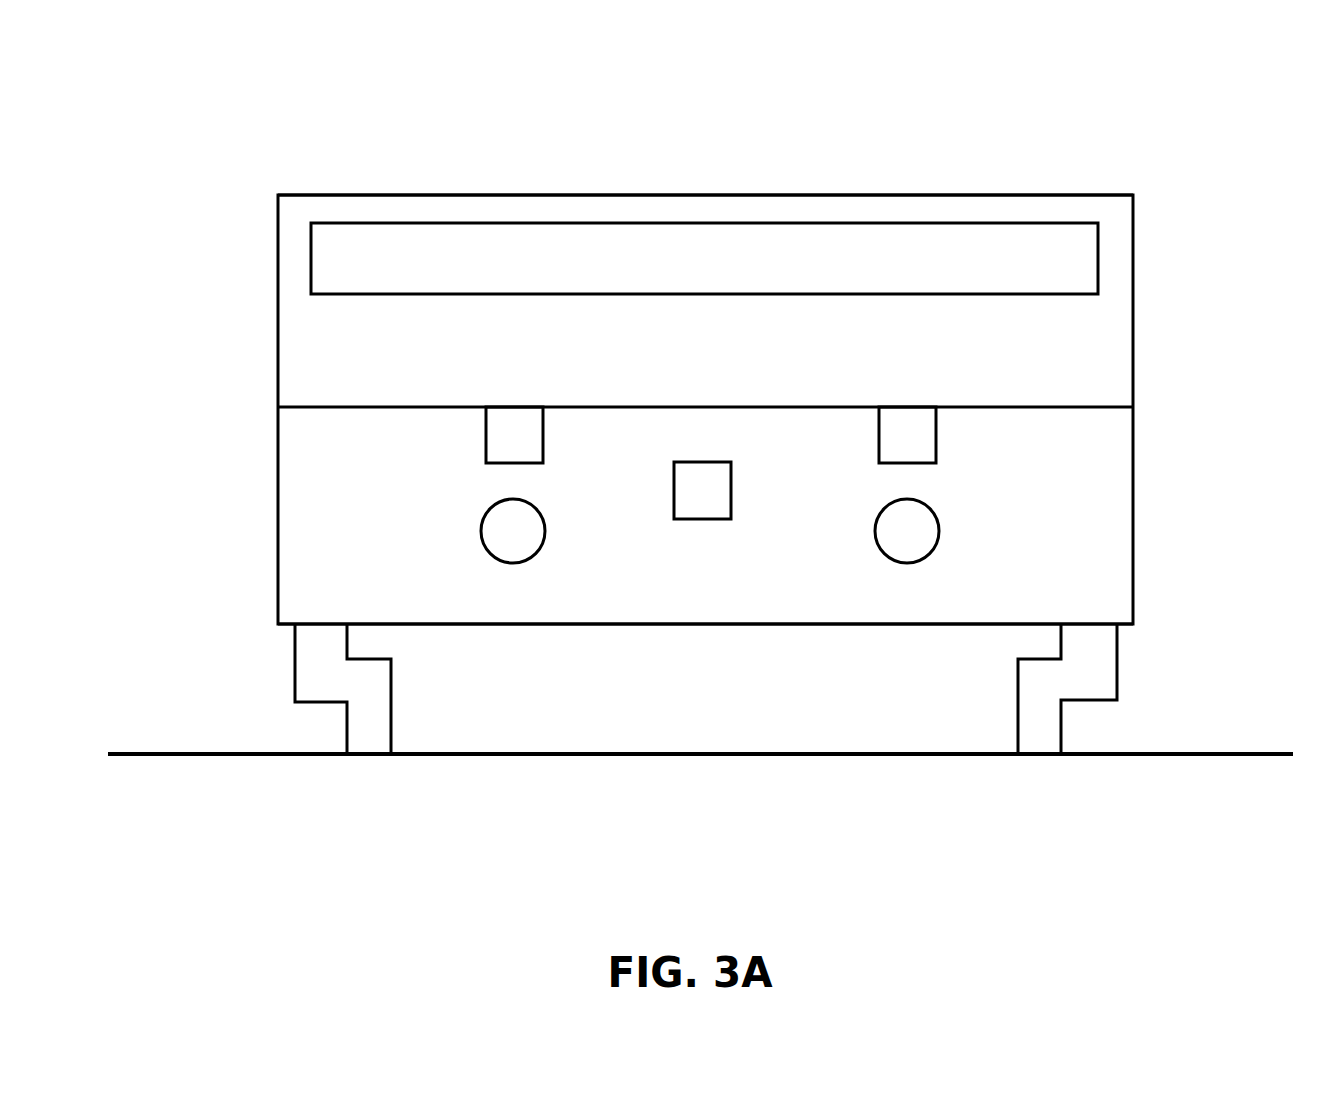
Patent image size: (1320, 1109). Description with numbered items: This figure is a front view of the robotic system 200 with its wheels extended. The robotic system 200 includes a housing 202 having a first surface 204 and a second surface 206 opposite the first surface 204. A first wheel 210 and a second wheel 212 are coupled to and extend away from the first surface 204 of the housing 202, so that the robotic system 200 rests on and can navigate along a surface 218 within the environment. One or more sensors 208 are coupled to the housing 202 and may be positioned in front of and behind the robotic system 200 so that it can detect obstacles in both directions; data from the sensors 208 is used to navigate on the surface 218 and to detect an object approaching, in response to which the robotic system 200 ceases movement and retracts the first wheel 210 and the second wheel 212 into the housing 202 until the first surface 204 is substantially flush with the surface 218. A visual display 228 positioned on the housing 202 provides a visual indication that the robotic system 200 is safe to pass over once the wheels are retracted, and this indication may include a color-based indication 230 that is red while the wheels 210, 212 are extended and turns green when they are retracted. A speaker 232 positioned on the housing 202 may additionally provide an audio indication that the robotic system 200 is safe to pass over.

The robotic system 200 is at (1246, 116).
The housing 202 is at (828, 207).
The first surface 204 is at (753, 626).
The second surface 206 is at (547, 197).
The sensors 208 is at (543, 432).
The first wheel 210 is at (373, 738).
The second wheel 212 is at (1040, 738).
The surface 218 is at (228, 758).
The visual display 228 is at (320, 262).
The color-based indication 230 is at (521, 563).
The speaker 232 is at (910, 563).